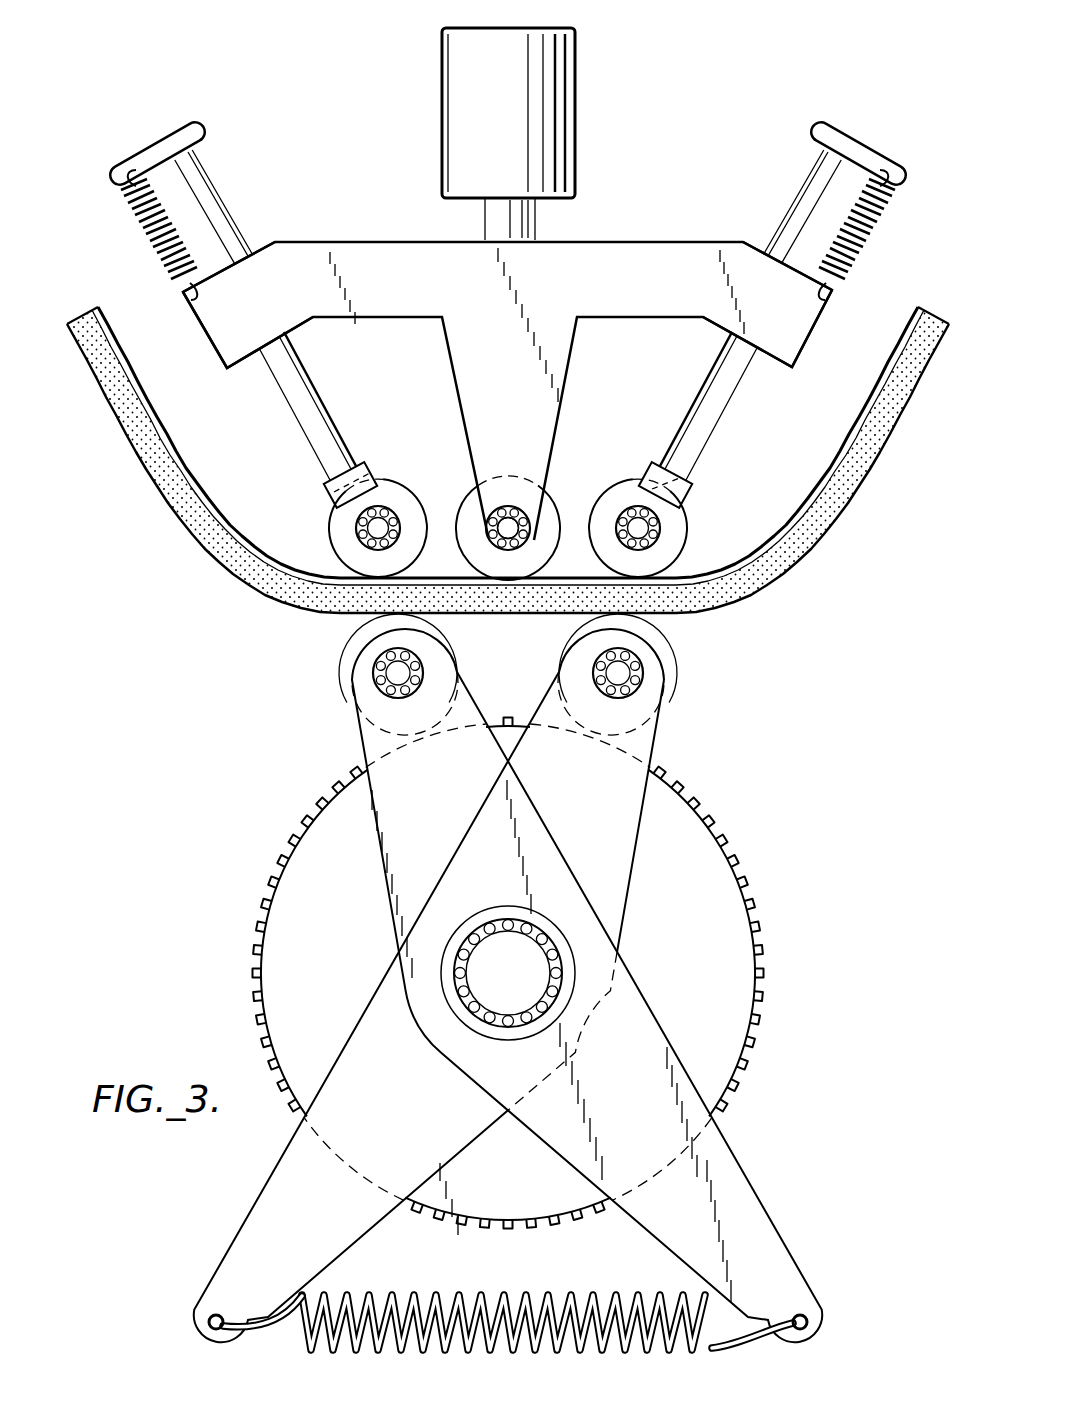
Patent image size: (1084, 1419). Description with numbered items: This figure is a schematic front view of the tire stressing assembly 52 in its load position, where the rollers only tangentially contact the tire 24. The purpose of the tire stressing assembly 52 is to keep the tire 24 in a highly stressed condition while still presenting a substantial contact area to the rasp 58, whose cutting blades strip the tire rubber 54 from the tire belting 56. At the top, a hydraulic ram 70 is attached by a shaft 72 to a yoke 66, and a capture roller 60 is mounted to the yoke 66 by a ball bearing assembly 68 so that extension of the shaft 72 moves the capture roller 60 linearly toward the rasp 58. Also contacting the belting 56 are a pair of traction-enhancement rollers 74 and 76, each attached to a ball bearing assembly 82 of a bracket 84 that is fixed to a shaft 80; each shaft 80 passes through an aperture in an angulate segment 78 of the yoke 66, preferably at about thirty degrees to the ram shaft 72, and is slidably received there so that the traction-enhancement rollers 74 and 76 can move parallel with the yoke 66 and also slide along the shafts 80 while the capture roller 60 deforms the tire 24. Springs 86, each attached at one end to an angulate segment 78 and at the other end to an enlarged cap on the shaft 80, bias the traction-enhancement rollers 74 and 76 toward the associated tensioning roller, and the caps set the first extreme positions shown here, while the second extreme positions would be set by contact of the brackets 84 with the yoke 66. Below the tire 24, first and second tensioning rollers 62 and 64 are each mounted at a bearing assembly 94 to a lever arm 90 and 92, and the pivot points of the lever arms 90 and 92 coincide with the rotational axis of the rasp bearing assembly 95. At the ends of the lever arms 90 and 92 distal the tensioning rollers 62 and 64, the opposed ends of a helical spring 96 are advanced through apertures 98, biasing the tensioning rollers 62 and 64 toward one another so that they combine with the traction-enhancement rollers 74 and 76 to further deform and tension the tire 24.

The tire 24 is at (508, 462).
The tire stressing assembly 52 is at (514, 979).
The tire rubber 54 is at (860, 452).
The tire belting 56 is at (860, 395).
The rasp 58 is at (750, 898).
The capture roller 60 is at (545, 500).
The first tensioning roller 62 is at (340, 672).
The second tensioning roller 64 is at (680, 672).
The yoke 66 is at (358, 250).
The ball bearing assembly 68 is at (490, 532).
The hydraulic ram 70 is at (465, 92).
The shaft 72 is at (520, 216).
The traction-enhancement roller 74 is at (335, 528).
The traction-enhancement roller 76 is at (680, 522).
The angulate segment 78 is at (215, 326).
The shaft 80 is at (298, 368).
The ball bearing assembly 82 is at (385, 520).
The bracket 84 is at (362, 470).
The spring 86 is at (150, 229).
The lever arm 90 is at (380, 748).
The lever arm 92 is at (650, 736).
The bearing assembly 94 is at (378, 660).
The rasp bearing assembly 95 is at (455, 957).
The helical spring 96 is at (488, 1293).
The aperture 98 is at (205, 1318).